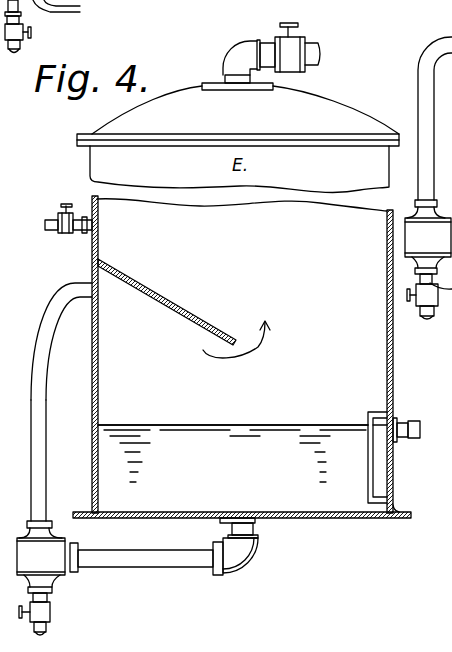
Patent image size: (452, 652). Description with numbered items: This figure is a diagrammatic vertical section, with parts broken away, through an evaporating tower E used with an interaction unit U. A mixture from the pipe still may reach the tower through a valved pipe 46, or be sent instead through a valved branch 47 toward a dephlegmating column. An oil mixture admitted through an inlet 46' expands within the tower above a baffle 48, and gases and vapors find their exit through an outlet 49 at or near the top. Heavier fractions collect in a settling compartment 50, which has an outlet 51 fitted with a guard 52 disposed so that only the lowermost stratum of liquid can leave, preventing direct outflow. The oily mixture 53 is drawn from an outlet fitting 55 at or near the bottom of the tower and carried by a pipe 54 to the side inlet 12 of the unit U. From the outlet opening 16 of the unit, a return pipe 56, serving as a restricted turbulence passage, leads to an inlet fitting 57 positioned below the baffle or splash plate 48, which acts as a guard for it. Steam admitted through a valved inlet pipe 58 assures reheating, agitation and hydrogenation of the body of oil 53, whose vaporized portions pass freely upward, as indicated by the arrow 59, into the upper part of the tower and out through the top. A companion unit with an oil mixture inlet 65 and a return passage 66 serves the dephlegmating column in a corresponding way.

The inlet opening 12 is at (78, 548).
The outlet opening 16 is at (50, 522).
The valved pipe 46 is at (35, 26).
The inlet 46' is at (57, 206).
The valved branch 47 is at (80, 12).
The baffle 48 is at (175, 300).
The outlet 49 is at (265, 48).
The settling compartment 50 is at (280, 398).
The outlet 51 is at (408, 420).
The guard 52 is at (369, 418).
The oily mixture 53 is at (233, 455).
The pipe 54 is at (145, 560).
The outlet fitting 55 is at (257, 525).
The return pipe 56 is at (40, 440).
The inlet fitting 57 is at (80, 282).
The valved inlet pipe 58 is at (45, 597).
The arrow 59 is at (260, 348).
The oil mixture inlet 65 is at (428, 247).
The return passage 66 is at (422, 90).